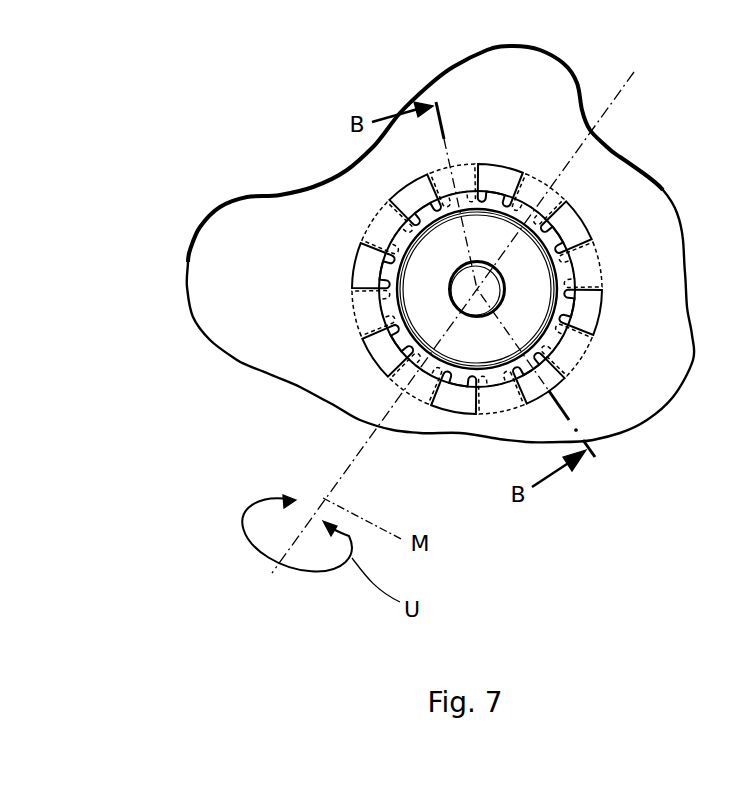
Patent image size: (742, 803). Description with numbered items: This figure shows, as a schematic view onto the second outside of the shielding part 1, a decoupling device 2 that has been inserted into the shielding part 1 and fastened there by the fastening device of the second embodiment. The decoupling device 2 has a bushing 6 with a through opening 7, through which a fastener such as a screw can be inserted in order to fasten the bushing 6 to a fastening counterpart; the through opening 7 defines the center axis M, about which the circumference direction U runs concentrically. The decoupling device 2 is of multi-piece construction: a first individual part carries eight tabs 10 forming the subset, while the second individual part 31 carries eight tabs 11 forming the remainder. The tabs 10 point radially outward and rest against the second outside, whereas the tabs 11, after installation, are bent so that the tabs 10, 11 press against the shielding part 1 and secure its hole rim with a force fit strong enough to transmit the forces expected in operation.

The shielding part 1 is at (657, 343).
The decoupling device 2 is at (432, 292).
The bushing 6 is at (433, 268).
The through opening 7 is at (485, 272).
The tabs 10 is at (545, 188).
The tabs 11 is at (497, 172).
The second individual part 31 is at (383, 309).